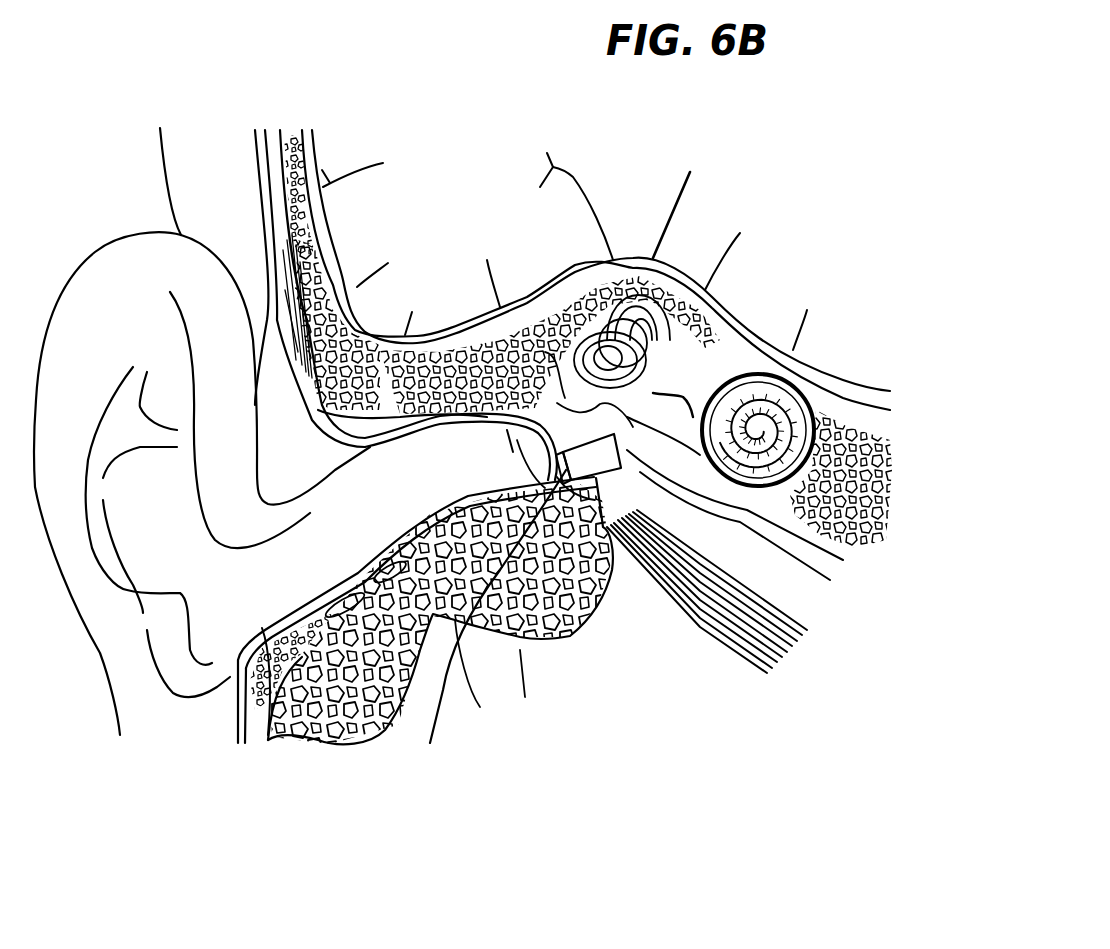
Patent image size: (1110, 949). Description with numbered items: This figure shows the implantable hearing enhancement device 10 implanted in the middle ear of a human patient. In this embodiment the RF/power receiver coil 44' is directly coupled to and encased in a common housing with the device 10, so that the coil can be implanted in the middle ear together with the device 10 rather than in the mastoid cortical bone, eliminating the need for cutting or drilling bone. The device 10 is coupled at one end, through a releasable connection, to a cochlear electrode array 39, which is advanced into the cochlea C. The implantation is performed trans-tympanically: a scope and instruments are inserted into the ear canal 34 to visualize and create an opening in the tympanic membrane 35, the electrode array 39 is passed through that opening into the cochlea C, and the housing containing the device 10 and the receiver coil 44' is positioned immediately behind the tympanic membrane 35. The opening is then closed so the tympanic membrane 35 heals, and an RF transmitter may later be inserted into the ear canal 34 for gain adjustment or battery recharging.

The device 10 is at (576, 470).
The ear canal 34 is at (278, 587).
The tympanic membrane 35 is at (505, 452).
The electrode array 39 is at (757, 500).
The RF/power receiver coil 44' is at (483, 628).
The cochlea C is at (724, 487).